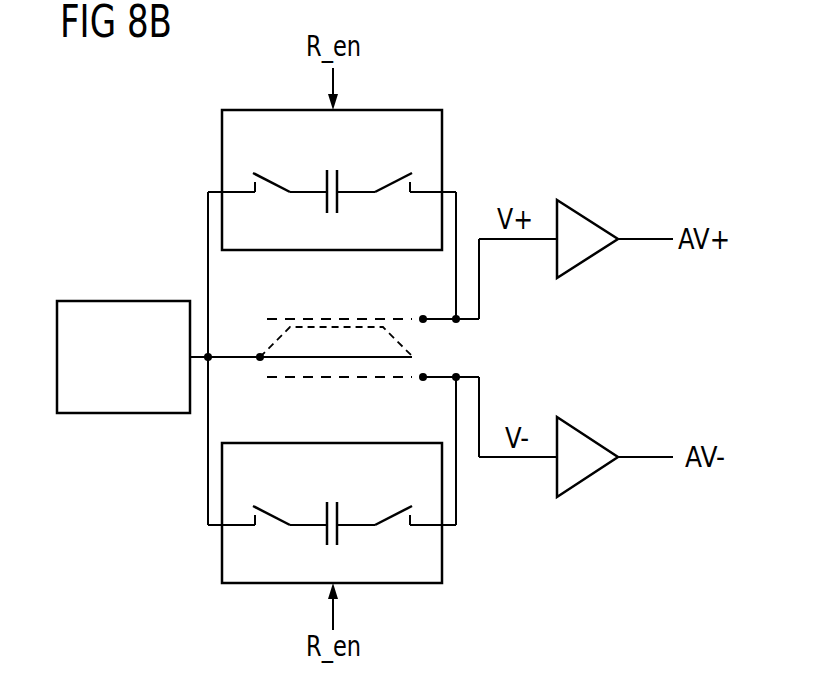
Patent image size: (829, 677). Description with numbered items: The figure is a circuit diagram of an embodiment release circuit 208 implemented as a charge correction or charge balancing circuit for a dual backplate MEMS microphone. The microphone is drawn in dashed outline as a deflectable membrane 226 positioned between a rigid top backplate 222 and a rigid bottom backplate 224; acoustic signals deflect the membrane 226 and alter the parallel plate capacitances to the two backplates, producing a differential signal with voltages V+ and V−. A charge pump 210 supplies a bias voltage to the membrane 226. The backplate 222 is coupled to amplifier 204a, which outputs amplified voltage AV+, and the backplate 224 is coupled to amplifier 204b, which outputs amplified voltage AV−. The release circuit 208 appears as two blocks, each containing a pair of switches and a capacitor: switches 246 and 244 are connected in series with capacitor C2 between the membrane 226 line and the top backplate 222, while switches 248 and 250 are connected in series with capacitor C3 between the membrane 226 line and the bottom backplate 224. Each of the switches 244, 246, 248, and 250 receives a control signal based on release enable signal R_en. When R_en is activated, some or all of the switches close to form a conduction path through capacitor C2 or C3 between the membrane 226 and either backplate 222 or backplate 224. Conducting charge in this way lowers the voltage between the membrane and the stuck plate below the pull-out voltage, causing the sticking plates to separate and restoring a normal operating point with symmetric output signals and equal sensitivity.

The release circuit 208 is at (222, 152).
The charge pump 210 is at (125, 300).
The top backplate 222 is at (340, 318).
The bottom backplate 224 is at (338, 382).
The membrane 226 is at (262, 362).
The switch 244 is at (391, 178).
The switch 246 is at (273, 175).
The switch 248 is at (273, 510).
The switch 250 is at (392, 512).
The capacitor C2 is at (341, 205).
The capacitor C3 is at (341, 537).
The amplifier 204a is at (587, 218).
The amplifier 204b is at (587, 435).